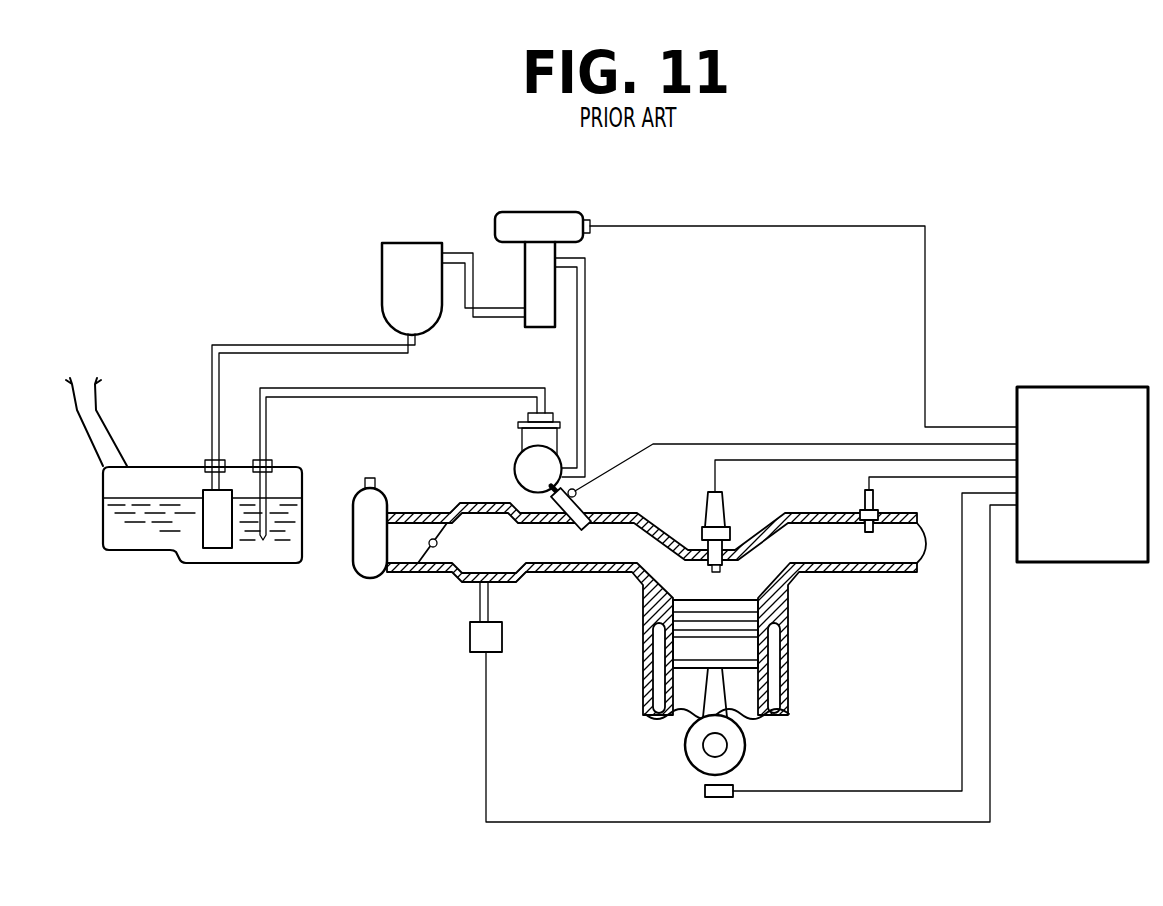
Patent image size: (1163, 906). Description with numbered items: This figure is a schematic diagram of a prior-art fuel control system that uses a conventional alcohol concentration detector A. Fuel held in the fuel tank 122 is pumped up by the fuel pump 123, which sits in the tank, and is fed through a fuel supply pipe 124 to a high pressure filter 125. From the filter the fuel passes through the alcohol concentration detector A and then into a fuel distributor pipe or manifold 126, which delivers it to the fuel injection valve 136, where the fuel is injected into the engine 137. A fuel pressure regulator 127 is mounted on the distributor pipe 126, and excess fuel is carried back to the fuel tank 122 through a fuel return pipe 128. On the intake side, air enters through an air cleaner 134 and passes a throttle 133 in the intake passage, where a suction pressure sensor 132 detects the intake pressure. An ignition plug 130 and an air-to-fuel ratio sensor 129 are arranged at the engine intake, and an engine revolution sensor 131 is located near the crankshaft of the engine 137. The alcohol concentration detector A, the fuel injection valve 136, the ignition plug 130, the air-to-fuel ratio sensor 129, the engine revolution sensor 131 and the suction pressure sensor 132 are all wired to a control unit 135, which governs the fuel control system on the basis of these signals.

The alcohol concentration detector A is at (520, 225).
The fuel tank 122 is at (125, 527).
The fuel pump 123 is at (220, 533).
The fuel supply pipe 124 is at (305, 348).
The high pressure filter 125 is at (400, 268).
The fuel distributor pipe 126 is at (525, 476).
The fuel pressure regulator 127 is at (518, 425).
The fuel return pipe 128 is at (357, 396).
The air-to-fuel ratio sensor 129 is at (865, 500).
The ignition plug 130 is at (720, 513).
The engine revolution sensor 131 is at (705, 791).
The suction pressure sensor 132 is at (480, 640).
The throttle 133 is at (415, 572).
The air cleaner 134 is at (368, 548).
The control unit 135 is at (1068, 385).
The fuel injection valve 136 is at (580, 503).
The engine 137 is at (773, 668).